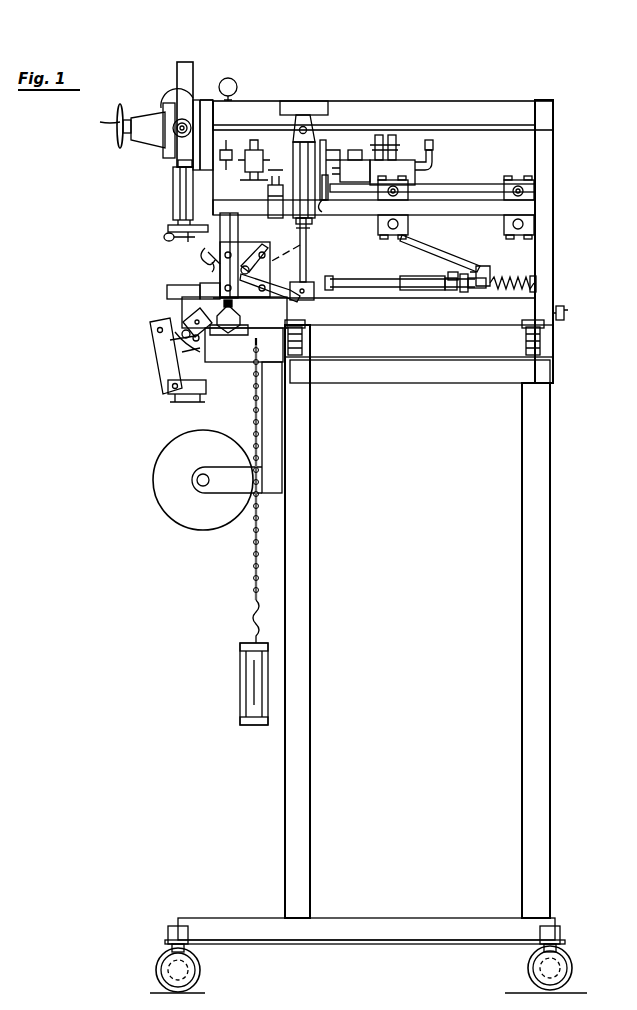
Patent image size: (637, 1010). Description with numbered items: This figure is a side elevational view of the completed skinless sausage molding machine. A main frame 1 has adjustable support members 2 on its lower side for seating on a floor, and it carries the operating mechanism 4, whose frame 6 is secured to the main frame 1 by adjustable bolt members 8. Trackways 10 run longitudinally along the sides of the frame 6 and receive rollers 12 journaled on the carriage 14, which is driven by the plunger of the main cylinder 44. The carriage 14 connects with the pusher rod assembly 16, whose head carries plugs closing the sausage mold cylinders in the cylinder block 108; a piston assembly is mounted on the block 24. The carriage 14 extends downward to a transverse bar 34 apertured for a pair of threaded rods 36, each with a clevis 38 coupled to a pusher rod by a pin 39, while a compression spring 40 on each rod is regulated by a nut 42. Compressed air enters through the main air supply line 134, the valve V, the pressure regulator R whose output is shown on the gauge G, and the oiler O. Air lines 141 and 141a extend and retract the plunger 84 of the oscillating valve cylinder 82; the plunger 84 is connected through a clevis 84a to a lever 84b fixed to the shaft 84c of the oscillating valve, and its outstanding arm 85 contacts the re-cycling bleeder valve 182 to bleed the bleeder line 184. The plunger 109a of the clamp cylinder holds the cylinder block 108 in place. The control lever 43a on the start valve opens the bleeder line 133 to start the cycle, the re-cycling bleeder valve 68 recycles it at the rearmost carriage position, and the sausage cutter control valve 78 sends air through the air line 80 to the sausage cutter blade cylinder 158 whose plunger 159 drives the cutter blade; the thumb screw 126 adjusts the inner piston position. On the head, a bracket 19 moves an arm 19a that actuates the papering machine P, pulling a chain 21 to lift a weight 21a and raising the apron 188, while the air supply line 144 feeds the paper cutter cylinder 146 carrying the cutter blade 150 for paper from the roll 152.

The main frame 1 is at (550, 553).
The adjustable support members 2 is at (205, 980).
The operating mechanism 4 is at (555, 252).
The frame 6 is at (553, 115).
The adjustable bolt members 8 is at (302, 342).
The trackways 10 is at (535, 207).
The rollers 12 is at (514, 184).
The carriage 14 is at (448, 258).
The pusher rod assembly 16 is at (384, 280).
The bracket 19 is at (225, 280).
The arm 19a is at (168, 292).
The chain 21 is at (252, 598).
The weight 21a is at (248, 702).
The block 24 is at (420, 292).
The transverse bar 34 is at (484, 268).
The threaded rods 36 is at (468, 292).
The clevis 38 is at (452, 292).
The pin 39 is at (450, 272).
The compression spring 40 is at (530, 278).
The nut 42 is at (536, 284).
The control lever 43a is at (232, 96).
The main cylinder 44 is at (444, 186).
The re-cycling bleeder valve 68 is at (395, 160).
The sausage cutter control valve 78 is at (280, 148).
The air line 80 is at (178, 164).
The oscillating valve cylinder 82 is at (358, 160).
The plunger 84 is at (306, 262).
The clevis 84a is at (342, 333).
The lever 84b is at (288, 357).
The shaft 84c is at (252, 262).
The outstanding arm 85 is at (300, 298).
The cylinder block 108 is at (205, 262).
The plunger 109a is at (195, 238).
The thumb screw 126 is at (564, 312).
The air bleeder line 133 is at (418, 148).
The main air supply line 134 is at (185, 403).
The conduit 141 is at (330, 150).
The air line 141a is at (328, 190).
The air supply line 144 is at (232, 304).
The paper cutter cylinder 146 is at (225, 336).
The cutter blade 150 is at (183, 325).
The roll 152 is at (153, 495).
The sausage cutter blade cylinder 158 is at (173, 190).
The plunger 159 is at (175, 226).
The re-cycling bleeder valve 182 is at (266, 210).
The bleeder line 184 is at (305, 128).
The apron 188 is at (158, 350).
The gauge G is at (177, 68).
The oiler O is at (170, 88).
The valve V is at (170, 120).
The pressure regulator R is at (118, 124).
The papering machine P is at (140, 373).